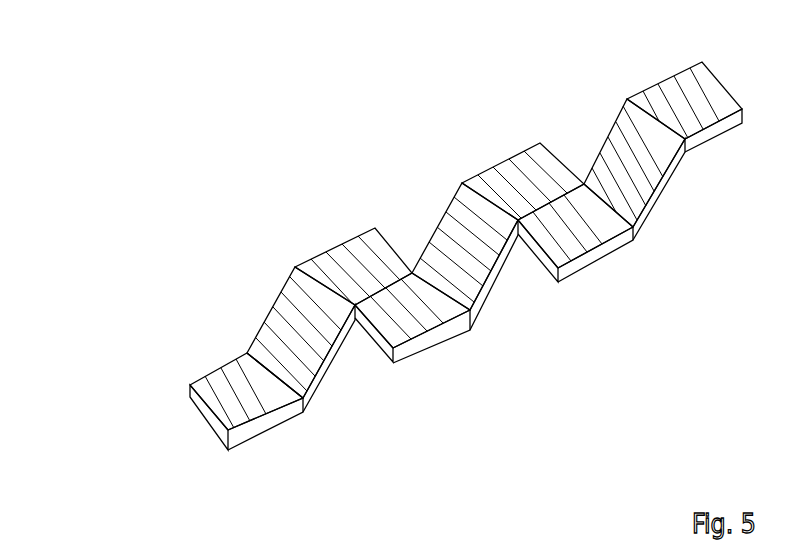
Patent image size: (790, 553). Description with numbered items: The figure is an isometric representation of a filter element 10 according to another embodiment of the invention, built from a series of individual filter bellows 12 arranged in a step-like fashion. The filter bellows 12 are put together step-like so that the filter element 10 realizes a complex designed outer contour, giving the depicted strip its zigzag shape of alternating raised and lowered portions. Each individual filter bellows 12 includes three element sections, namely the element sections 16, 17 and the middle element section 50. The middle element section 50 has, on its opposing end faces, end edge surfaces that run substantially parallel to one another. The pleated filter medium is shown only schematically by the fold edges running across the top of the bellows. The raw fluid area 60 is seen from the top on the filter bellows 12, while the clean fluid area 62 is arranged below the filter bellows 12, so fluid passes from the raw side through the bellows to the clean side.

The filter element 10 is at (453, 275).
The filter bellows 12 is at (274, 420).
The element section 16 is at (340, 252).
The element section 17 is at (213, 390).
The middle element section 50 is at (277, 322).
The raw fluid area 60 is at (423, 197).
The clean fluid area 62 is at (513, 387).